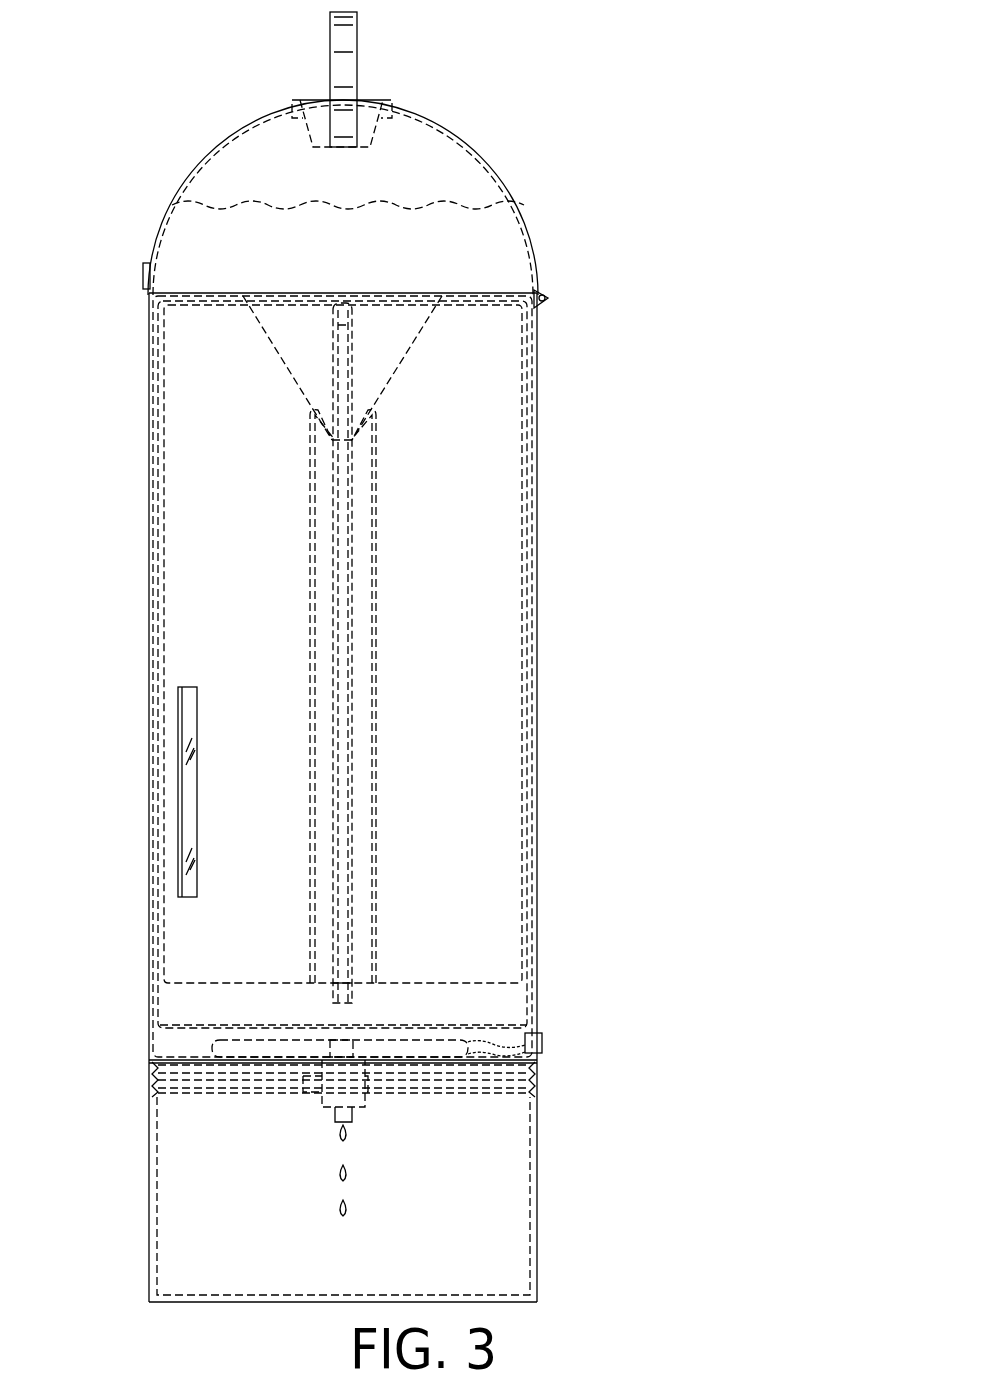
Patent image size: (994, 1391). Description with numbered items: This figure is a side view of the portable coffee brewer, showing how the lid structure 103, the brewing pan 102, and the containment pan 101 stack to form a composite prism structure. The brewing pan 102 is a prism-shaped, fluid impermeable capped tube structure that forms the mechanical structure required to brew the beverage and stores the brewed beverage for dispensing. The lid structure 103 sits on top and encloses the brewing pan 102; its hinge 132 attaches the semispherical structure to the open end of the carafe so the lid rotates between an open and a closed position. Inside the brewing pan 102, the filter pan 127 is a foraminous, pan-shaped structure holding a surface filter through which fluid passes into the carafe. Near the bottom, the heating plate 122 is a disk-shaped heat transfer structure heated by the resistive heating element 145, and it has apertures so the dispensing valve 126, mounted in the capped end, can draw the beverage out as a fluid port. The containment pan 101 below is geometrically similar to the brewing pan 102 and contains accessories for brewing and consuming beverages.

The containment pan 101 is at (537, 1138).
The brewing pan 102 is at (557, 577).
The lid structure 103 is at (495, 158).
The heating plate 122 is at (203, 1048).
The dispensing valve 126 is at (360, 1110).
The filter pan 127 is at (393, 375).
The hinge 132 is at (544, 290).
The heating element 145 is at (483, 1050).